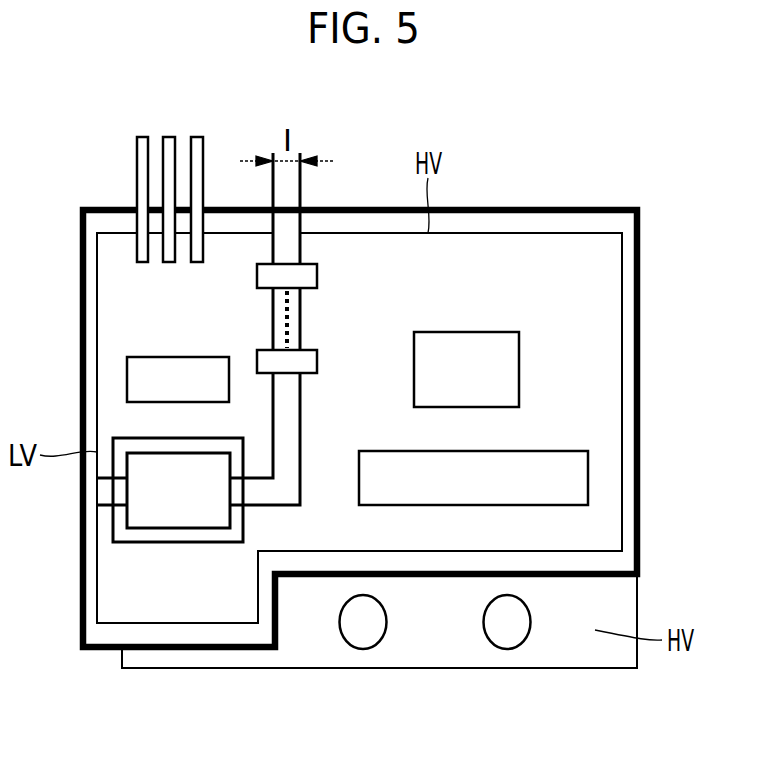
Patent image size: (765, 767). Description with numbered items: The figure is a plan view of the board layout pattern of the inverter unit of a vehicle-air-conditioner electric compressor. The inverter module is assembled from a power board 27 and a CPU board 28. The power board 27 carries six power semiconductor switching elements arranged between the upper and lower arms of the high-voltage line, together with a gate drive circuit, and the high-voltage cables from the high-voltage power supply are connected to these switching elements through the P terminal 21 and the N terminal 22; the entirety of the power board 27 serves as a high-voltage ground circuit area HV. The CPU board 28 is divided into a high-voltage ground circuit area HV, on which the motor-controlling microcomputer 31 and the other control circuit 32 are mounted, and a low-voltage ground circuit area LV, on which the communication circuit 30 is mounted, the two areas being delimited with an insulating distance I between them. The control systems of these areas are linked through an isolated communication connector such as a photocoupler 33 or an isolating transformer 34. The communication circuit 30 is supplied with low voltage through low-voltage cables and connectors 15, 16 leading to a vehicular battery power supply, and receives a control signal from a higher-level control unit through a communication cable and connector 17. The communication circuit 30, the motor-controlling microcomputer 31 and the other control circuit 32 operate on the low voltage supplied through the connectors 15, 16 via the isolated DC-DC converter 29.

The low-voltage connector 15 is at (137, 146).
The low-voltage connector 16 is at (166, 137).
The communication connector 17 is at (201, 146).
The P terminal 21 is at (385, 638).
The N terminal 22 is at (528, 638).
The power board 27 is at (317, 630).
The CPU board 28 is at (522, 207).
The isolated DC-DC converter 29 is at (113, 490).
The communication circuit 30 is at (127, 380).
The motor-controlling microcomputer 31 is at (472, 332).
The other control circuit 32 is at (553, 451).
The photocoupler 33 is at (317, 275).
The isolating transformer 34 is at (145, 530).